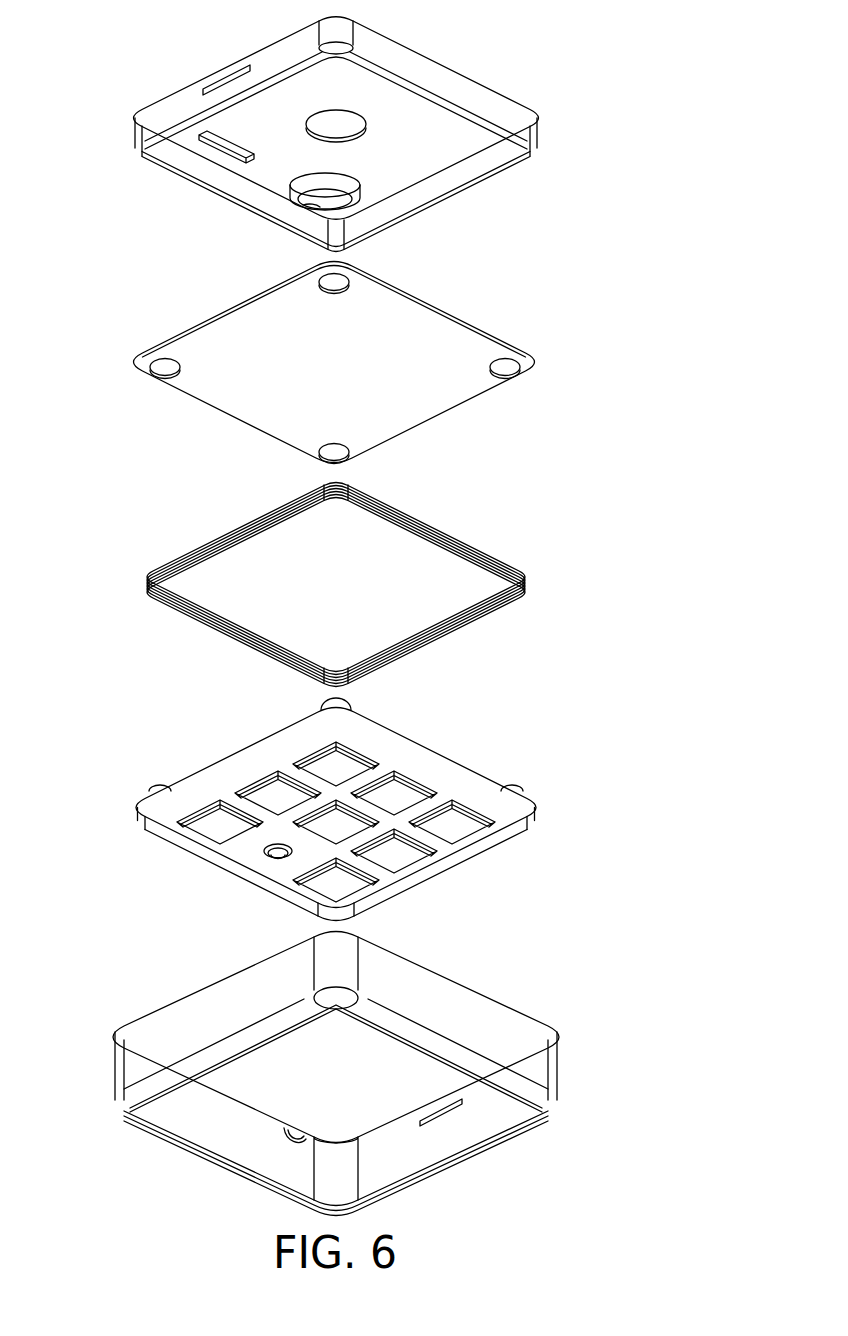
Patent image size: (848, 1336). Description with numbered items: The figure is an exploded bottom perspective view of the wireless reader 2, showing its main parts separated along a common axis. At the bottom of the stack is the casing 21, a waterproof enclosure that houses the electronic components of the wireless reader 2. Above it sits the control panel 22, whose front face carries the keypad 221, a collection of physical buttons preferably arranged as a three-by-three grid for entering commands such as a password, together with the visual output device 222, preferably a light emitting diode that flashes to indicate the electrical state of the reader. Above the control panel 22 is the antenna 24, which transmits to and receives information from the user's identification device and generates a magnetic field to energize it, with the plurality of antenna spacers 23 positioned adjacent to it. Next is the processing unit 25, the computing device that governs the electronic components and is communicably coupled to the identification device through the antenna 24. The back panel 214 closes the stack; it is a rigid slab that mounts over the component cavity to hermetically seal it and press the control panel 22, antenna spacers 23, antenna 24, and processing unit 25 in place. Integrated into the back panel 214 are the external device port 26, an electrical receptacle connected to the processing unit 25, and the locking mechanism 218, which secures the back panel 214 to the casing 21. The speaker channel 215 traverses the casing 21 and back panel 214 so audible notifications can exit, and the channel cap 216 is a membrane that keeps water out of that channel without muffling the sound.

The wireless reader 2 is at (394, 610).
The casing 21 is at (337, 1074).
The control panel 22 is at (277, 943).
The antenna spacers 23 is at (341, 703).
The antenna 24 is at (147, 588).
The processing unit 25 is at (254, 423).
The external device port 26 is at (234, 162).
The back panel 214 is at (334, 130).
The speaker channel 215 is at (329, 202).
The channel cap 216 is at (296, 1132).
The locking mechanism 218 is at (230, 78).
The keypad 221 is at (278, 806).
The visual output device 222 is at (277, 858).